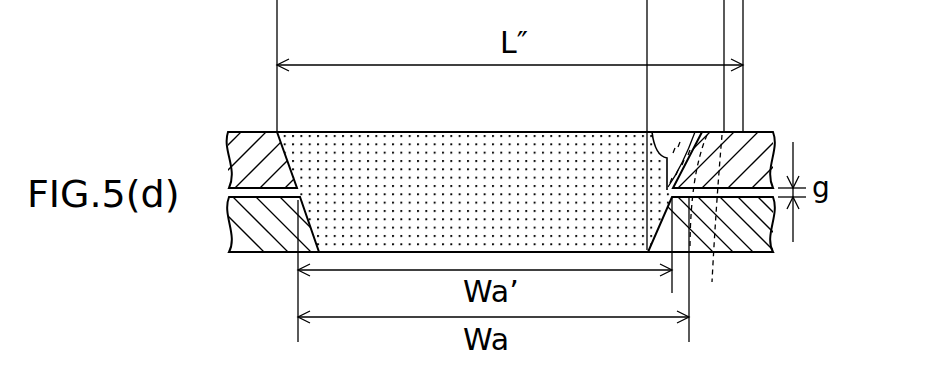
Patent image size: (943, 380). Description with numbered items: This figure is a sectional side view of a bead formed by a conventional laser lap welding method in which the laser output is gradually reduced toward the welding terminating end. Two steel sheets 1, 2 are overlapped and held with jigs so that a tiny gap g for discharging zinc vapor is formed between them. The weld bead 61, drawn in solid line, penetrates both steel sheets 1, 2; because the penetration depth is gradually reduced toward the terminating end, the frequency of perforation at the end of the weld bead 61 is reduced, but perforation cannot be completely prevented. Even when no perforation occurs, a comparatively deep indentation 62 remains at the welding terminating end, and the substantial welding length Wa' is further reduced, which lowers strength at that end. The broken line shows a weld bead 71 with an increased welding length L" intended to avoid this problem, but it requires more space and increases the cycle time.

The steel sheet 1 is at (758, 160).
The steel sheet 2 is at (759, 252).
The weld bead 61 is at (357, 148).
The indentation 62 is at (672, 132).
The weld bead 71 is at (720, 226).